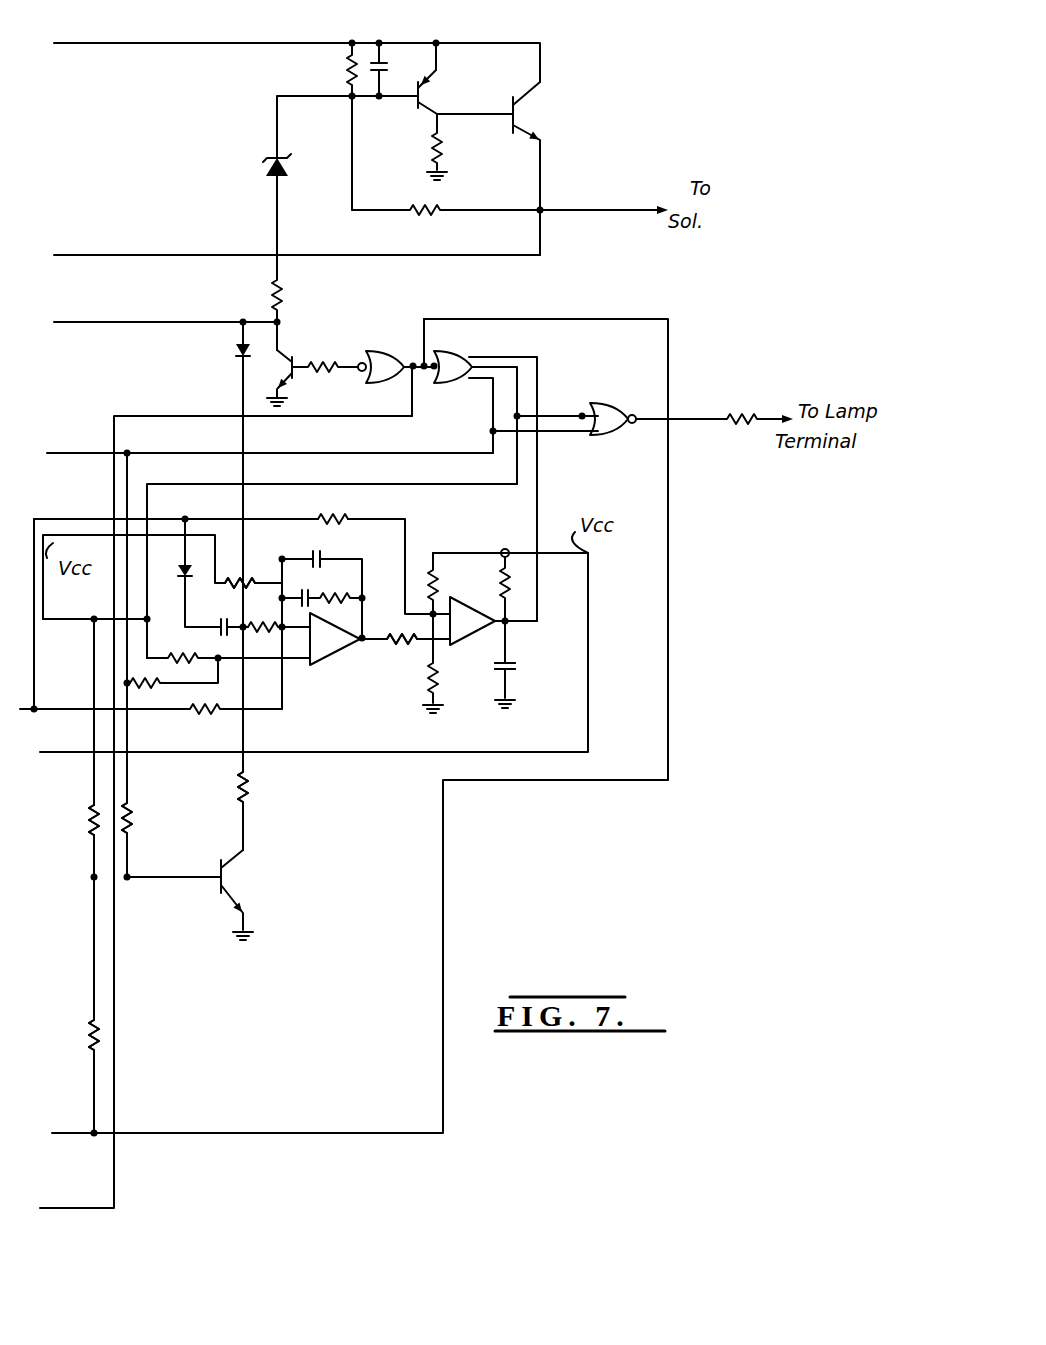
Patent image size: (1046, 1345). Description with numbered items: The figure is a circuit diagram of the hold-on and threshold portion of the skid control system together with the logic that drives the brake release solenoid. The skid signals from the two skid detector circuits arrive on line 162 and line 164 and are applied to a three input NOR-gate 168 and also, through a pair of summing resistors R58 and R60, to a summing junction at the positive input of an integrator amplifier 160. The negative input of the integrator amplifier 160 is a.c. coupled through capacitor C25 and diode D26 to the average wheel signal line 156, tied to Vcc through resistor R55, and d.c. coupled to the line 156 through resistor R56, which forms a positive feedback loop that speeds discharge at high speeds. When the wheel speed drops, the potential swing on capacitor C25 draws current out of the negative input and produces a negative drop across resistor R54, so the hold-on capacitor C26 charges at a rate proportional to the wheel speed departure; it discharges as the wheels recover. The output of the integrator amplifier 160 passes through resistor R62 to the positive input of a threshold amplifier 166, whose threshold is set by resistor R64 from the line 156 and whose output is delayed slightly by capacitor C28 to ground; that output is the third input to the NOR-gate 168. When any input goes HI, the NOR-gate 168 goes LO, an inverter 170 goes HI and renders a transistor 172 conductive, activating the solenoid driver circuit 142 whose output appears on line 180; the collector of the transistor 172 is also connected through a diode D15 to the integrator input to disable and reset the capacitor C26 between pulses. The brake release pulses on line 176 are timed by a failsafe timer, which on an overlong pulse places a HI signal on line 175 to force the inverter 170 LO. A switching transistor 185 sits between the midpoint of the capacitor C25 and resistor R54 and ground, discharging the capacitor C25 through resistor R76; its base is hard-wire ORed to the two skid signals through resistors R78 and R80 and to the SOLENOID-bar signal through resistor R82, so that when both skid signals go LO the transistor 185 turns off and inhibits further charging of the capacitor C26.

The line 180 is at (150, 254).
The solenoid driver circuit 142 is at (510, 172).
The transistor 172 is at (292, 358).
The diode D15 is at (238, 350).
The inverter 170 is at (392, 352).
The line 176 is at (597, 313).
The line 175 is at (326, 426).
The three input NOR-gate 168 is at (450, 383).
The line 162 is at (418, 452).
The line 164 is at (460, 488).
The average wheel signal line 156 is at (78, 502).
The resistor R64 is at (345, 512).
The summing resistor R58 is at (127, 683).
The diode D26 is at (180, 572).
The resistor R55 is at (245, 574).
The capacitor C25 is at (219, 614).
The resistor R54 is at (275, 613).
The summing resistor R60 is at (228, 647).
The hold-on capacitor C26 is at (296, 600).
The integrator amplifier 160 is at (330, 662).
The resistor R62 is at (386, 650).
The threshold amplifier 166 is at (464, 604).
The capacitor C28 is at (515, 665).
The resistor R56 is at (208, 716).
The resistor R80 is at (92, 818).
The resistor R78 is at (132, 822).
The resistor R76 is at (250, 795).
The switching transistor 185 is at (232, 866).
The resistor R82 is at (92, 1030).